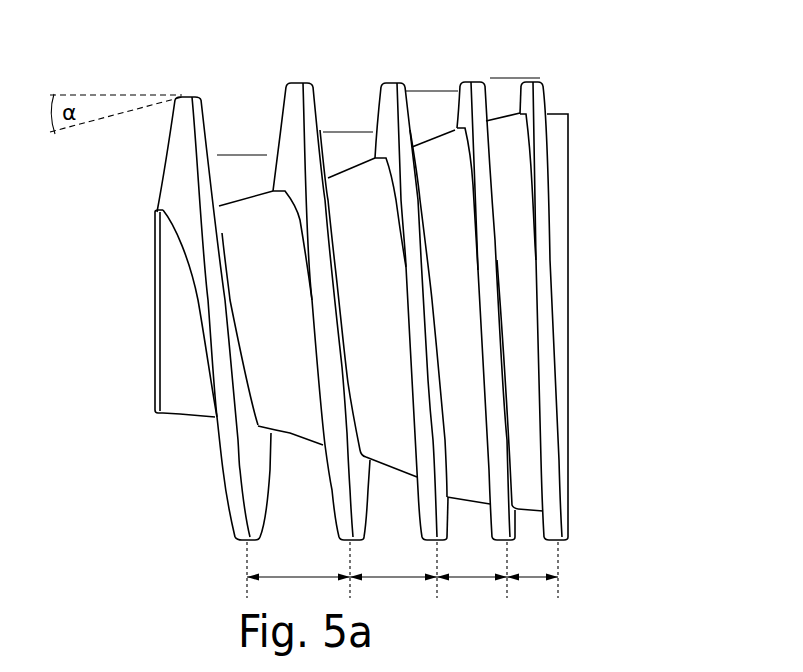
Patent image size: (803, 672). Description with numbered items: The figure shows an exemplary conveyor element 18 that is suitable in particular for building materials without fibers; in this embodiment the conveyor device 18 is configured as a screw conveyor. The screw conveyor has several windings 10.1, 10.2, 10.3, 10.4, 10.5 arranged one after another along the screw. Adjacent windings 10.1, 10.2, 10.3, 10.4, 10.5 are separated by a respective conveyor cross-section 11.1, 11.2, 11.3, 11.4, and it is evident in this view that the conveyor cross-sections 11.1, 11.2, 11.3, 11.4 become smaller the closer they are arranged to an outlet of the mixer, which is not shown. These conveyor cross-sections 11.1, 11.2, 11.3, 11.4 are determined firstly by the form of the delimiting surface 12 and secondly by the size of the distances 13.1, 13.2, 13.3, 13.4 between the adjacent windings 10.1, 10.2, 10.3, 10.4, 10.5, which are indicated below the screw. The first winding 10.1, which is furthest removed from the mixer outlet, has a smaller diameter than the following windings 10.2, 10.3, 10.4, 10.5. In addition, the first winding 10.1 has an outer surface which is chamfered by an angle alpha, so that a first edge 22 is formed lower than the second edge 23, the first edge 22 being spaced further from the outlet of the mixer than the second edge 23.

The first winding 10.1 is at (188, 95).
The winding 10.2 is at (300, 82).
The winding 10.3 is at (398, 80).
The winding 10.4 is at (470, 85).
The winding 10.5 is at (543, 80).
The conveyor cross-section 11.1 is at (242, 141).
The conveyor cross-section 11.2 is at (348, 119).
The conveyor cross-section 11.3 is at (431, 79).
The conveyor cross-section 11.4 is at (515, 67).
The delimiting surface 12 is at (378, 463).
The distance 13.1 is at (298, 566).
The distance 13.2 is at (393, 566).
The distance 13.3 is at (472, 563).
The distance 13.4 is at (532, 565).
The conveyor element 18 is at (619, 91).
The first edge 22 is at (190, 143).
The second edge 23 is at (207, 117).